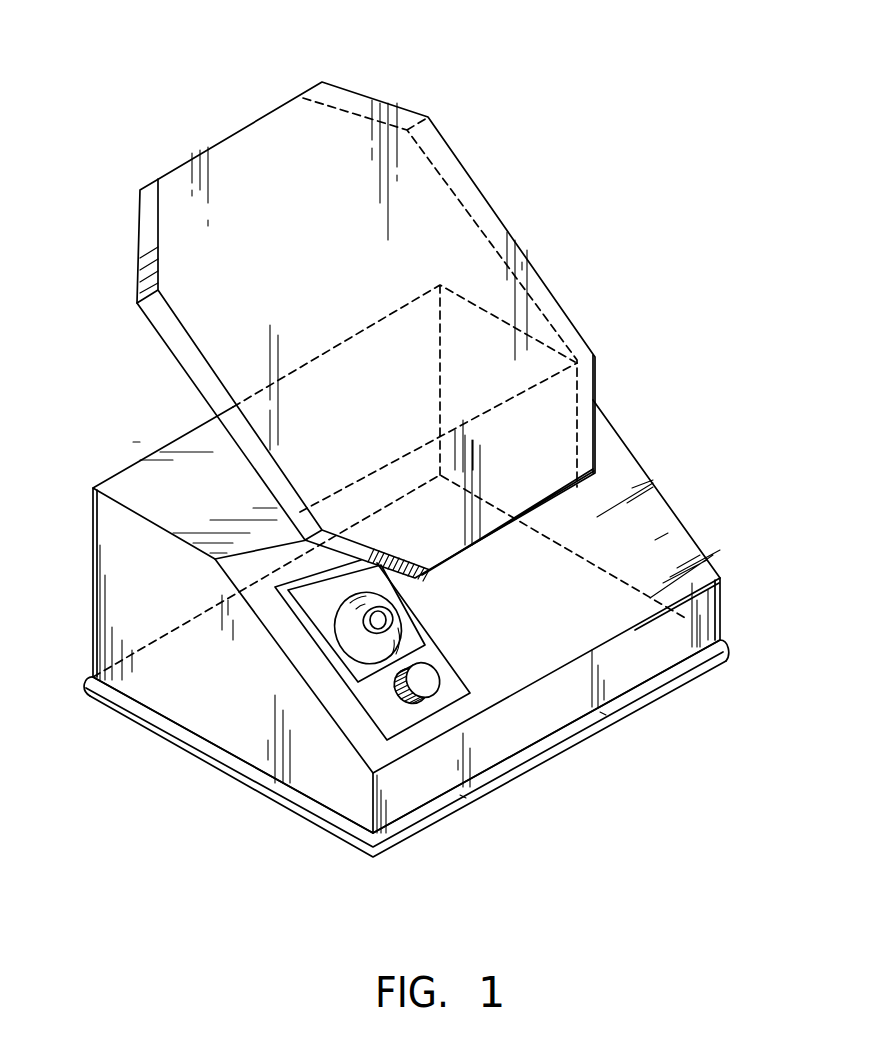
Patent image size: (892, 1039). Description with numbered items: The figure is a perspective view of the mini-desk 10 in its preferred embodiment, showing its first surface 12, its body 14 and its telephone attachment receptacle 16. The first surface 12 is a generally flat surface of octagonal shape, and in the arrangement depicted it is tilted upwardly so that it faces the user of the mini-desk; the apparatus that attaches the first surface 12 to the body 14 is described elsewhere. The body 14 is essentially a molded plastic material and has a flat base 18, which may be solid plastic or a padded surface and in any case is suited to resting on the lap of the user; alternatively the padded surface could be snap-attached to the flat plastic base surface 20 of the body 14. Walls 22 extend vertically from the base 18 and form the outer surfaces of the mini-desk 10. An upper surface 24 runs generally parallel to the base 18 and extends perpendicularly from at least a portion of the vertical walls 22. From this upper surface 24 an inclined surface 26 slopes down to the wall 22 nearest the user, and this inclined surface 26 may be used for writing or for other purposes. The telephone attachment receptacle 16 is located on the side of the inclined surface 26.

The mini-desk 10 is at (402, 474).
The first surface 12 is at (280, 107).
The body 14 is at (402, 593).
The telephone attachment receptacle 16 is at (364, 633).
The flat base 18 is at (420, 820).
The flat plastic base surface 20 is at (610, 693).
The walls 22 is at (634, 449).
The upper surface 24 is at (145, 482).
The inclined surface 26 is at (665, 542).